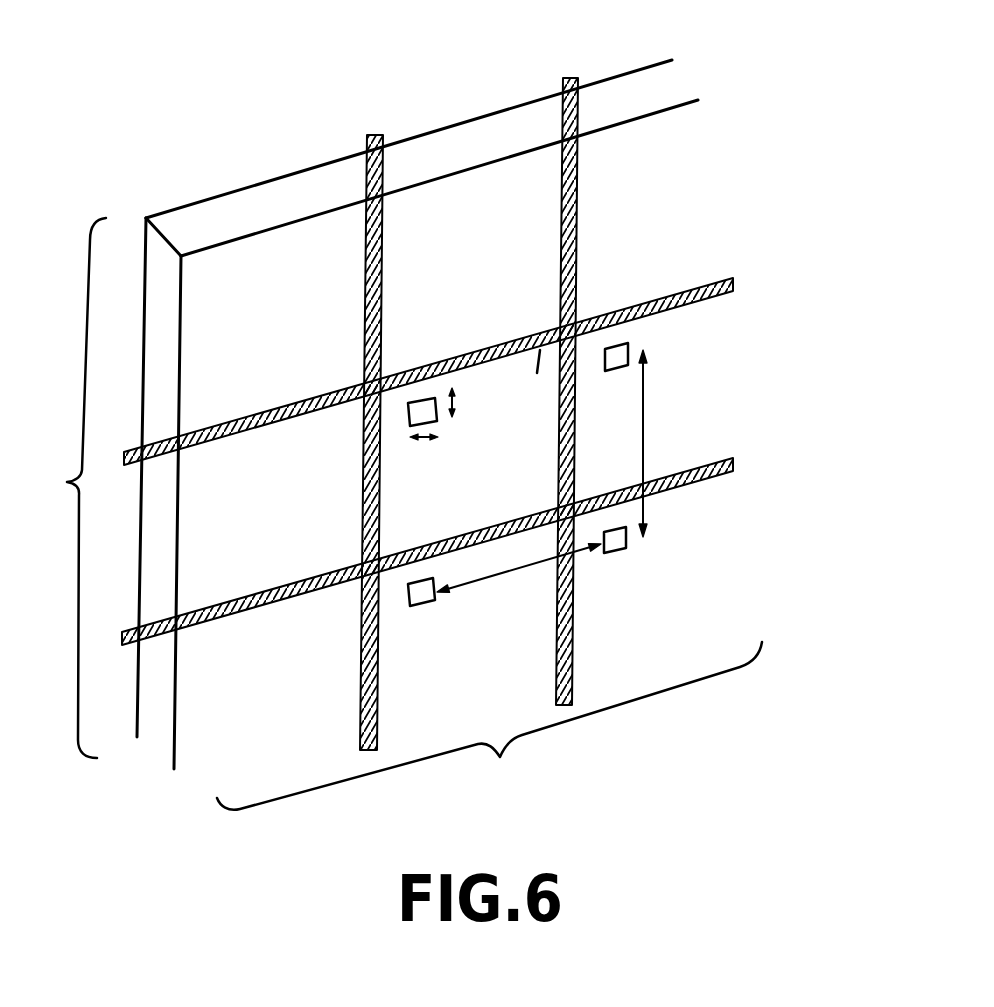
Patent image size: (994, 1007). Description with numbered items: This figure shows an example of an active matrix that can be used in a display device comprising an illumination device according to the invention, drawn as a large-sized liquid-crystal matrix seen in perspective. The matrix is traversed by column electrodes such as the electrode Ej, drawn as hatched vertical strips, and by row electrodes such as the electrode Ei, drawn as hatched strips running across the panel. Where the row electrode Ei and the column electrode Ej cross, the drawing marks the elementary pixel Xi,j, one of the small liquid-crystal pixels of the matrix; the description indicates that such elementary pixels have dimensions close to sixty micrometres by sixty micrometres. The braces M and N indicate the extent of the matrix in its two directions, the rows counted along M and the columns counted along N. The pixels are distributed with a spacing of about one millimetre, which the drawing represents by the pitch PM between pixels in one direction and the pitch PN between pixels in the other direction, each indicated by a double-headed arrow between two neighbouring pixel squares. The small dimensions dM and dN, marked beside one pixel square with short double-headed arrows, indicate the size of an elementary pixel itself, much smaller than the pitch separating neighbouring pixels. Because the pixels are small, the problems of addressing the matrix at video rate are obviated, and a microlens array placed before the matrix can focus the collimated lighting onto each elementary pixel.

The column electrode (j-th) Ej is at (372, 138).
The row electrode (i-th) Ei is at (723, 292).
The pixel at intersection of electrodes i and j Xi,j is at (577, 300).
The number of rows M is at (68, 488).
The number of columns N is at (489, 726).
The row pitch PM is at (646, 432).
The column pitch PN is at (483, 582).
The row offset distance dM is at (457, 394).
The column offset distance dN is at (420, 440).